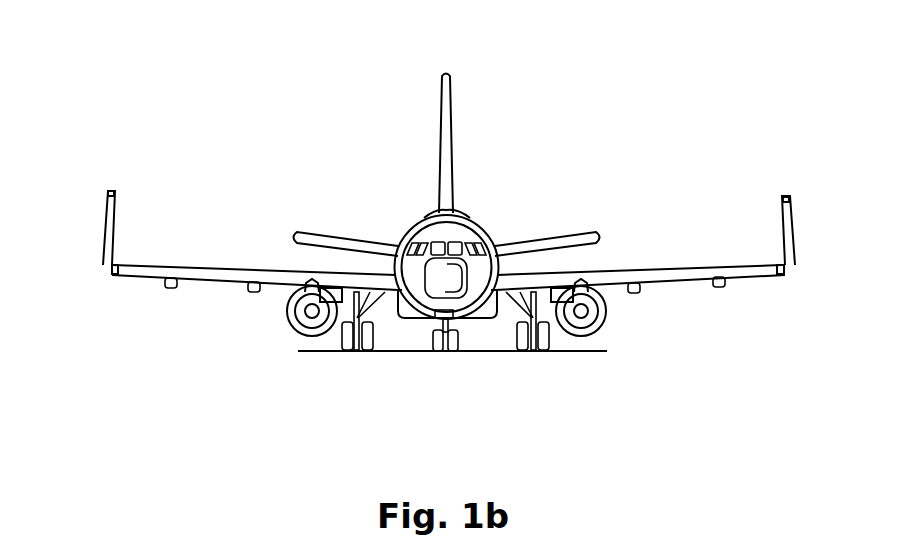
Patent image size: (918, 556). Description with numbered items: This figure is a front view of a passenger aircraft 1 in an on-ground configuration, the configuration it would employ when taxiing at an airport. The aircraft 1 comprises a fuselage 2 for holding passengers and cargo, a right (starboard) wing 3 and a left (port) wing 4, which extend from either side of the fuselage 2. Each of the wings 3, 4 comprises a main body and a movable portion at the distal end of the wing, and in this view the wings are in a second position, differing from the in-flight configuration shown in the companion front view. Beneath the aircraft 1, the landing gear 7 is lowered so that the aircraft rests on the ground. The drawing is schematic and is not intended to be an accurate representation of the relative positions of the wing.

The aircraft 1 is at (207, 54).
The fuselage 2 is at (465, 217).
The right (starboard) wing 3 is at (243, 270).
The left (port) wing 4 is at (645, 268).
The landing gear 7 is at (452, 345).